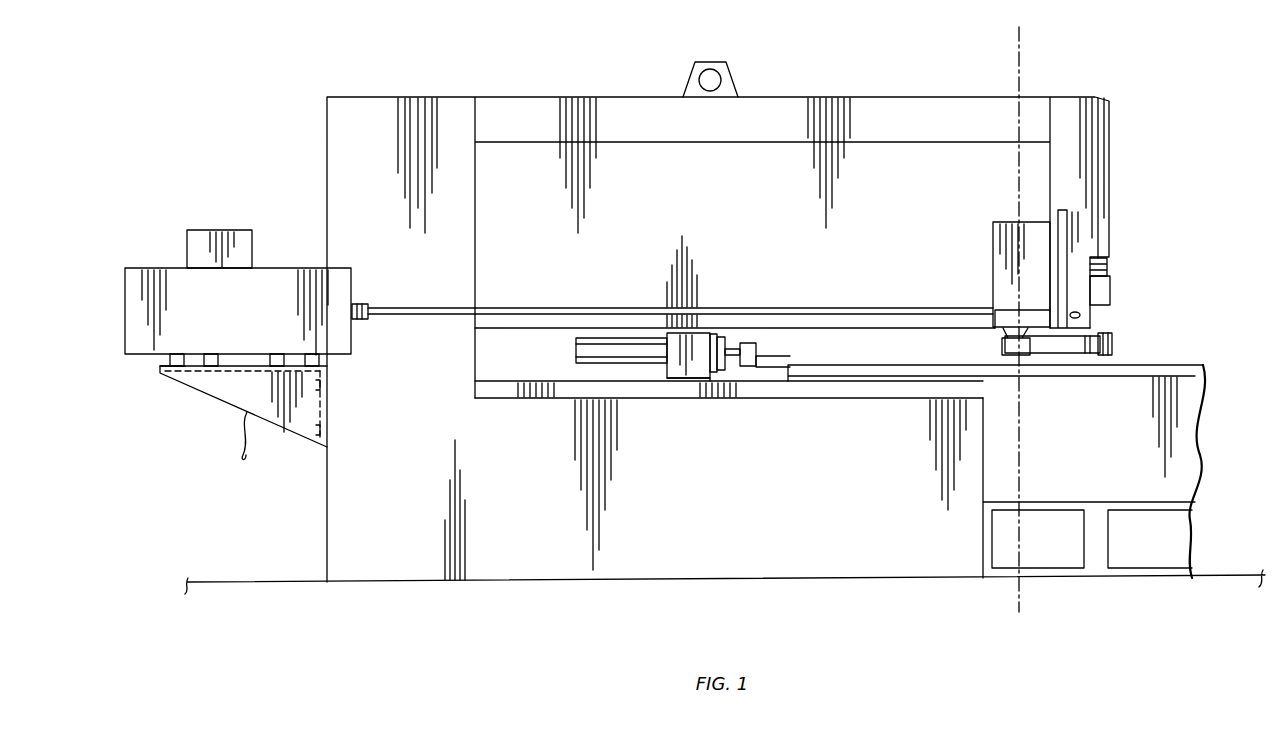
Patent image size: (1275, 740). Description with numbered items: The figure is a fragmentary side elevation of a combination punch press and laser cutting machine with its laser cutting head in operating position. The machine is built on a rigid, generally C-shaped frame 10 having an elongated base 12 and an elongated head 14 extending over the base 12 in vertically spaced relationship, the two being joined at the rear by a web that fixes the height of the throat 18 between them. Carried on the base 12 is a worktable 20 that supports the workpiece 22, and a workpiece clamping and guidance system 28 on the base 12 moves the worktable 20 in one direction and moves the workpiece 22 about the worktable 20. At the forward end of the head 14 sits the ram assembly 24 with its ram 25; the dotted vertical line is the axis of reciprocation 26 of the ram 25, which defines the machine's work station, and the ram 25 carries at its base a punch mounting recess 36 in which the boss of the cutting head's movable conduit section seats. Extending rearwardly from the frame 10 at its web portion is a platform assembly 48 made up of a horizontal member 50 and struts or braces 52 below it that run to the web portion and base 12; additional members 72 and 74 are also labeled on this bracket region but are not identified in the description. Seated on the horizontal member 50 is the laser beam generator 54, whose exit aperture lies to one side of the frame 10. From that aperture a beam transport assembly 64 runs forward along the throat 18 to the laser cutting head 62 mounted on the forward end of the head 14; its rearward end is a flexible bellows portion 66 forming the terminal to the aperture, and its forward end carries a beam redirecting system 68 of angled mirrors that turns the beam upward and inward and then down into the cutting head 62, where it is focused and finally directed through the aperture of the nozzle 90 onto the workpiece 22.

The frame 10 is at (866, 97).
The base 12 is at (836, 544).
The head 14 is at (782, 97).
The throat 18 is at (530, 364).
The worktable 20 is at (672, 390).
The workpiece 22 is at (1140, 366).
The ram assembly 24 is at (1033, 259).
The ram 25 is at (1003, 330).
The axis of reciprocation 26 is at (1015, 33).
The workpiece clamping and guidance system 28 is at (697, 357).
The punch mounting recess 36 is at (1030, 356).
The platform assembly 48 is at (217, 397).
The horizontal member 50 is at (162, 368).
The struts or braces 52 is at (243, 394).
The laser beam generator 54 is at (125, 300).
The laser cutting head 62 is at (1107, 268).
The beam transport assembly 64 is at (852, 307).
The flexible bellows portion 66 is at (362, 300).
The beam redirecting system 68 is at (1111, 290).
The mounting foot 72 is at (180, 373).
The fastener 74 is at (210, 355).
The nozzle 90 is at (1067, 364).